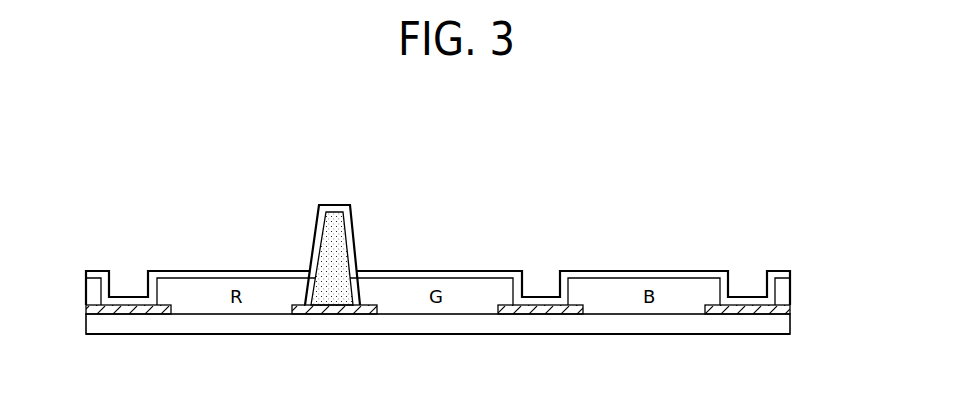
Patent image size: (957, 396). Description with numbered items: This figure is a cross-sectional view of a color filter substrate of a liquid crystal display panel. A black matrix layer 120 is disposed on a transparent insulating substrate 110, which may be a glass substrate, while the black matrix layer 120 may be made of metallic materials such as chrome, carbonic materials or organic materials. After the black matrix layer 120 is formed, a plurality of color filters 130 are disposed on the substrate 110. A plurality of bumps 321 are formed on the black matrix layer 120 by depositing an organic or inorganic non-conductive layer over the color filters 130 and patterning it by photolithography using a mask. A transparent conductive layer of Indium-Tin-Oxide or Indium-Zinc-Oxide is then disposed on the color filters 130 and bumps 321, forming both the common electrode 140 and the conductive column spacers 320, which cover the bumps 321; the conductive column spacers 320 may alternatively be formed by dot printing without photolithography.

The transparent insulating substrate 110 is at (753, 325).
The black matrix layer 120 is at (786, 308).
The color filters 130 is at (697, 285).
The common electrode 140 is at (628, 271).
The conductive column spacers 320 is at (335, 226).
The bumps 321 is at (343, 233).